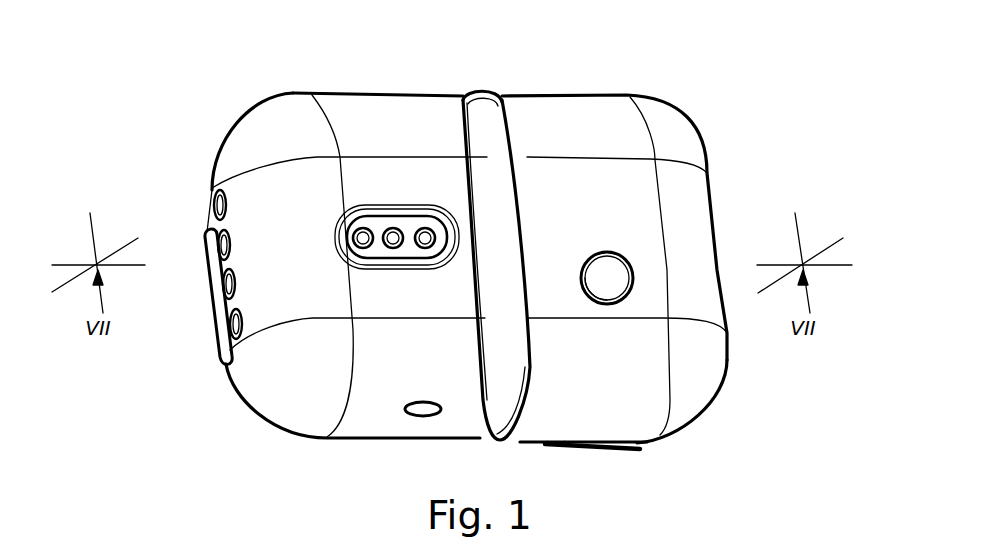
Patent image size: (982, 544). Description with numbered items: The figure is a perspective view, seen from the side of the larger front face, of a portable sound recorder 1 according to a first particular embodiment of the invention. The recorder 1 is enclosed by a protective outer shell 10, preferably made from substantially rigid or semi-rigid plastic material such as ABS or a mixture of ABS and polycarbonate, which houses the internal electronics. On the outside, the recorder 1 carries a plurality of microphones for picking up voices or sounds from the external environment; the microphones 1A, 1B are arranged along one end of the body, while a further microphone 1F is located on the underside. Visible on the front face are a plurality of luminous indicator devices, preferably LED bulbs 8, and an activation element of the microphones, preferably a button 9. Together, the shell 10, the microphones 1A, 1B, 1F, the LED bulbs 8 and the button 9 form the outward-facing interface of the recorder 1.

The recorder 1 is at (686, 110).
The microphone 1A is at (220, 205).
The microphone 1B is at (228, 246).
The microphone 1F is at (422, 410).
The LED bulbs 8 is at (362, 232).
The button 9 is at (607, 278).
The protective outer shell 10 is at (480, 133).